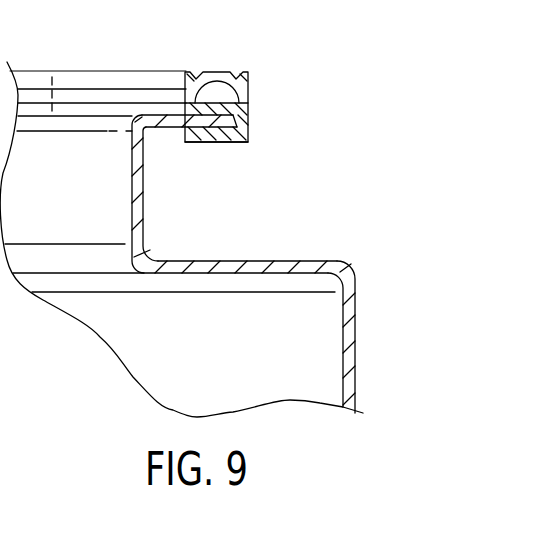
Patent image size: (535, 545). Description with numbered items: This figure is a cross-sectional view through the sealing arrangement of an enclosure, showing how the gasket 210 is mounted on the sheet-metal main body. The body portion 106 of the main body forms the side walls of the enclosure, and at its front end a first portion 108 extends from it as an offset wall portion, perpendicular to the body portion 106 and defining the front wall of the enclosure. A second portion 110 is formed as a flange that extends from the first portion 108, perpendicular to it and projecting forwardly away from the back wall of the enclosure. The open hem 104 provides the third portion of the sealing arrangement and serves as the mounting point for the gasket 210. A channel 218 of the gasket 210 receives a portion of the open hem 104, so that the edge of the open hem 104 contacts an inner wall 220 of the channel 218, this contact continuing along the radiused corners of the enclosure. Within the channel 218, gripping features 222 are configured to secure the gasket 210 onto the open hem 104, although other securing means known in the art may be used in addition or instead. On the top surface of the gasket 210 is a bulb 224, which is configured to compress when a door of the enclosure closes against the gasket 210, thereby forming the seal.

The open hem 104 is at (157, 115).
The body portion 106 is at (355, 350).
The first portion 108 is at (245, 261).
The second portion 110 is at (131, 188).
The gripping features 222 is at (185, 112).
The gasket 210 is at (250, 103).
The bulb 224 is at (213, 87).
The inner wall 220 is at (243, 120).
The channel 218 is at (222, 143).